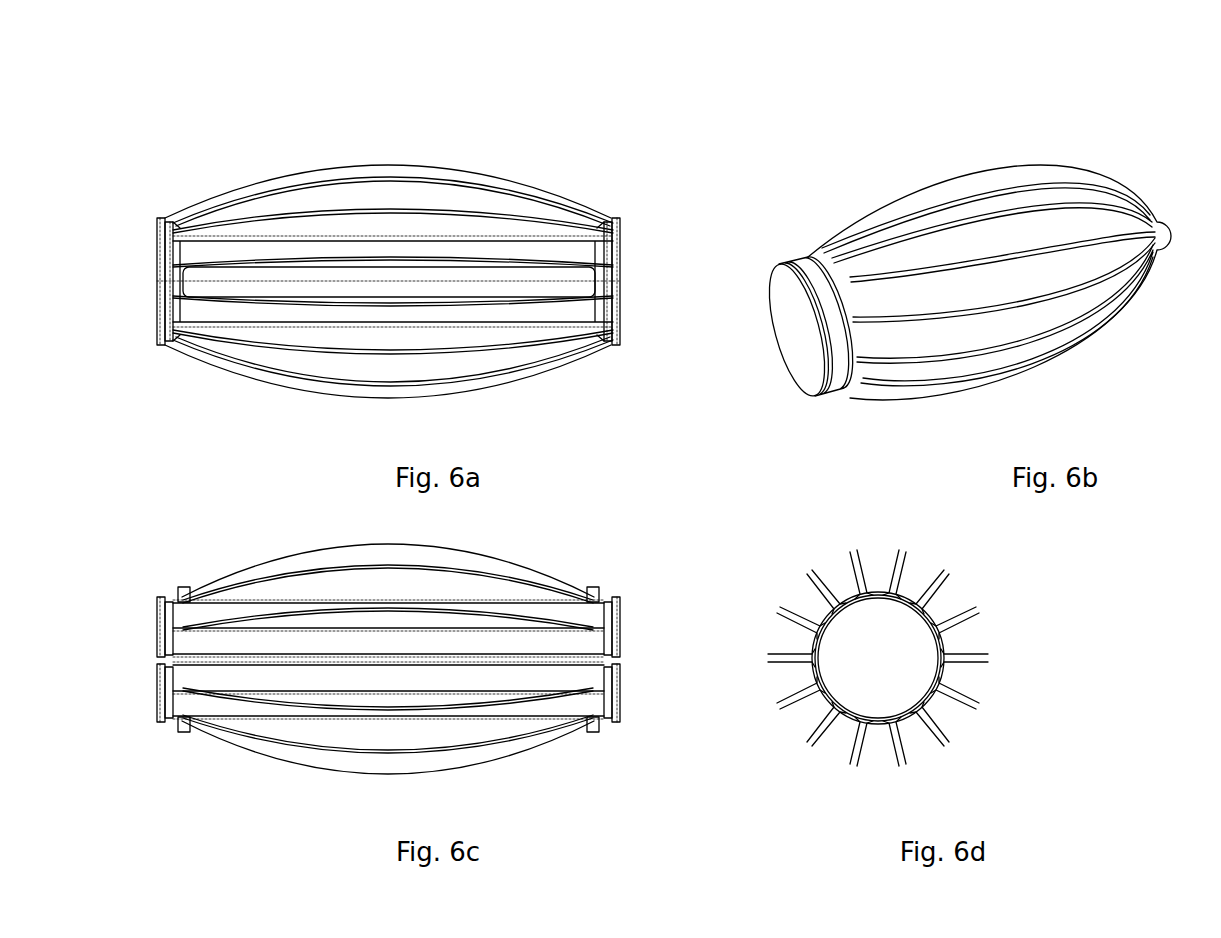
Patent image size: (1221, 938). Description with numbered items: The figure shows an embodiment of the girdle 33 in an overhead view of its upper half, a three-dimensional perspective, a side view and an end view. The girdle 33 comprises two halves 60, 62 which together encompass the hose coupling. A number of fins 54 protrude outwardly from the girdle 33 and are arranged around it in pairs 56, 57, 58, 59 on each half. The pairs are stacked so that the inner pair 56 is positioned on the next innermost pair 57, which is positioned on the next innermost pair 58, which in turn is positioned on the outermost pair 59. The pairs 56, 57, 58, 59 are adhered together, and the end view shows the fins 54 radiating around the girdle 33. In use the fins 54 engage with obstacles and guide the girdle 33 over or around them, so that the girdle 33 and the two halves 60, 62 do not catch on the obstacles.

In FIG. 6A, the girdle 33 is at (305, 175).
In FIG. 6C, the girdle 33 is at (603, 723).
In FIG. 6B, the girdle 33 is at (1135, 200).
In FIG. 6A, the fins 54 is at (542, 223).
In FIG. 6C, the fins 54 is at (223, 592).
In FIG. 6B, the fins 54 is at (1057, 340).
In FIG. 6A, the inner pair 56 is at (440, 257).
In FIG. 6C, the inner pair 56 is at (330, 547).
In FIG. 6B, the inner pair 56 is at (928, 200).
In FIG. 6D, the inner pair 56 is at (903, 555).
In FIG. 6A, the next innermost pair 57 is at (408, 209).
In FIG. 6C, the next innermost pair 57 is at (285, 572).
In FIG. 6B, the next innermost pair 57 is at (912, 250).
In FIG. 6D, the next innermost pair 57 is at (947, 573).
In FIG. 6A, the next innermost pair 58 is at (385, 178).
In FIG. 6C, the next innermost pair 58 is at (415, 601).
In FIG. 6B, the next innermost pair 58 is at (1000, 268).
In FIG. 6D, the next innermost pair 58 is at (983, 610).
In FIG. 6A, the outermost pair 59 is at (335, 166).
In FIG. 6C, the outermost pair 59 is at (517, 652).
In FIG. 6B, the outermost pair 59 is at (1057, 297).
In FIG. 6D, the outermost pair 59 is at (995, 653).
In FIG. 6A, the half 60 is at (156, 247).
In FIG. 6C, the half 60 is at (156, 617).
In FIG. 6B, the half 60 is at (775, 295).
In FIG. 6A, the half 62 is at (156, 317).
In FIG. 6C, the half 62 is at (156, 700).
In FIG. 6B, the half 62 is at (800, 380).